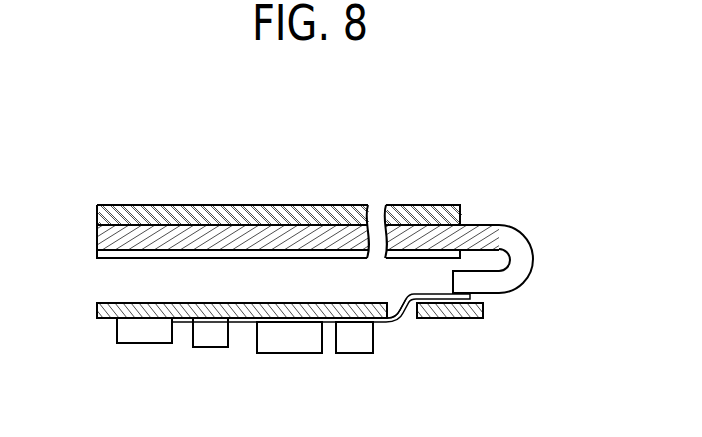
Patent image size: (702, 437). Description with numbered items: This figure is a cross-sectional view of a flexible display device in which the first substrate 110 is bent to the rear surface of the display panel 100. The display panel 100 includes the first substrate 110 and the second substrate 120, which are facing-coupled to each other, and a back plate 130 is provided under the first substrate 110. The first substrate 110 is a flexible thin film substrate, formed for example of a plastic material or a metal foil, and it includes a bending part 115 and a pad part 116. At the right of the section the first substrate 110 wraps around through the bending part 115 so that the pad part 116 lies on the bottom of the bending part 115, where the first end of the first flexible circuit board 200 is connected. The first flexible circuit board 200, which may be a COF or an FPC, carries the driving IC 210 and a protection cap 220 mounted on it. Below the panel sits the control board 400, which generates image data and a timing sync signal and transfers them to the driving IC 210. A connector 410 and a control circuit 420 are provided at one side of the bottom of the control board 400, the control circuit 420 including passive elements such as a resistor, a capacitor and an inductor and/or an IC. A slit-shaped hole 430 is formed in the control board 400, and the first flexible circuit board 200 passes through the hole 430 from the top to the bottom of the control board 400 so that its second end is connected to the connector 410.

The display panel 100 is at (291, 182).
The first substrate 110 is at (176, 241).
The second substrate 120 is at (225, 222).
The back plate 130 is at (183, 148).
The bending part 115 is at (533, 250).
The pad part 116 is at (460, 304).
The first flexible circuit board 200 is at (399, 299).
The driving IC 210 is at (352, 341).
The protection cap 220 is at (285, 341).
The control board 400 is at (107, 312).
The connector 410 is at (212, 336).
The control circuit 420 is at (148, 334).
The hole 430 is at (406, 328).